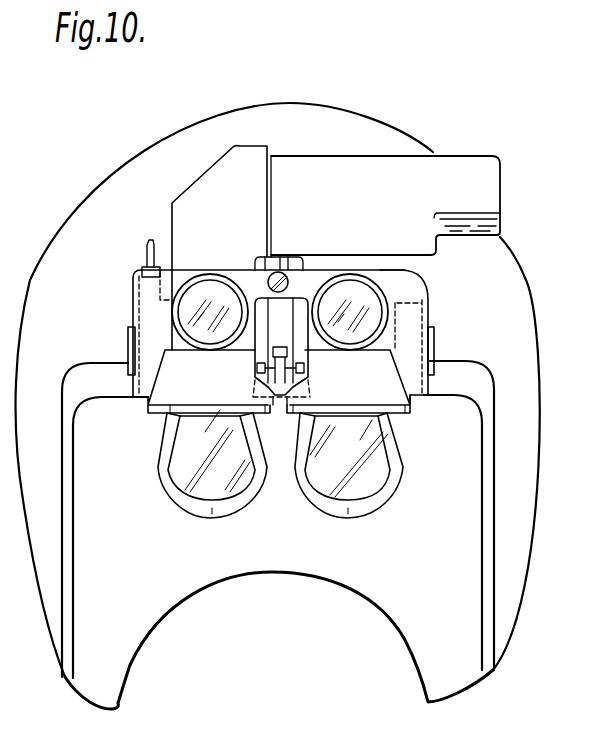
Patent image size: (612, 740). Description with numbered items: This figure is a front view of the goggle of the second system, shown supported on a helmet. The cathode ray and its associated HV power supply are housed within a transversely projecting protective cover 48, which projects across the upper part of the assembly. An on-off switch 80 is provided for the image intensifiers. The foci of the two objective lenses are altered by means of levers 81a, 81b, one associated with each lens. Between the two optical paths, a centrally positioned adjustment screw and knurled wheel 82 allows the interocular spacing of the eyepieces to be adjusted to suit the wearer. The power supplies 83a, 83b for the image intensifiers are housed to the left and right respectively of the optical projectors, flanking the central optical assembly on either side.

The protective cover 48 is at (448, 153).
The on-off switch 80 is at (145, 248).
The lever 81a is at (376, 266).
The lever 81b is at (240, 265).
The adjustment screw and knurled wheel 82 is at (303, 386).
The power supply 83a is at (412, 322).
The power supply 83b is at (147, 320).